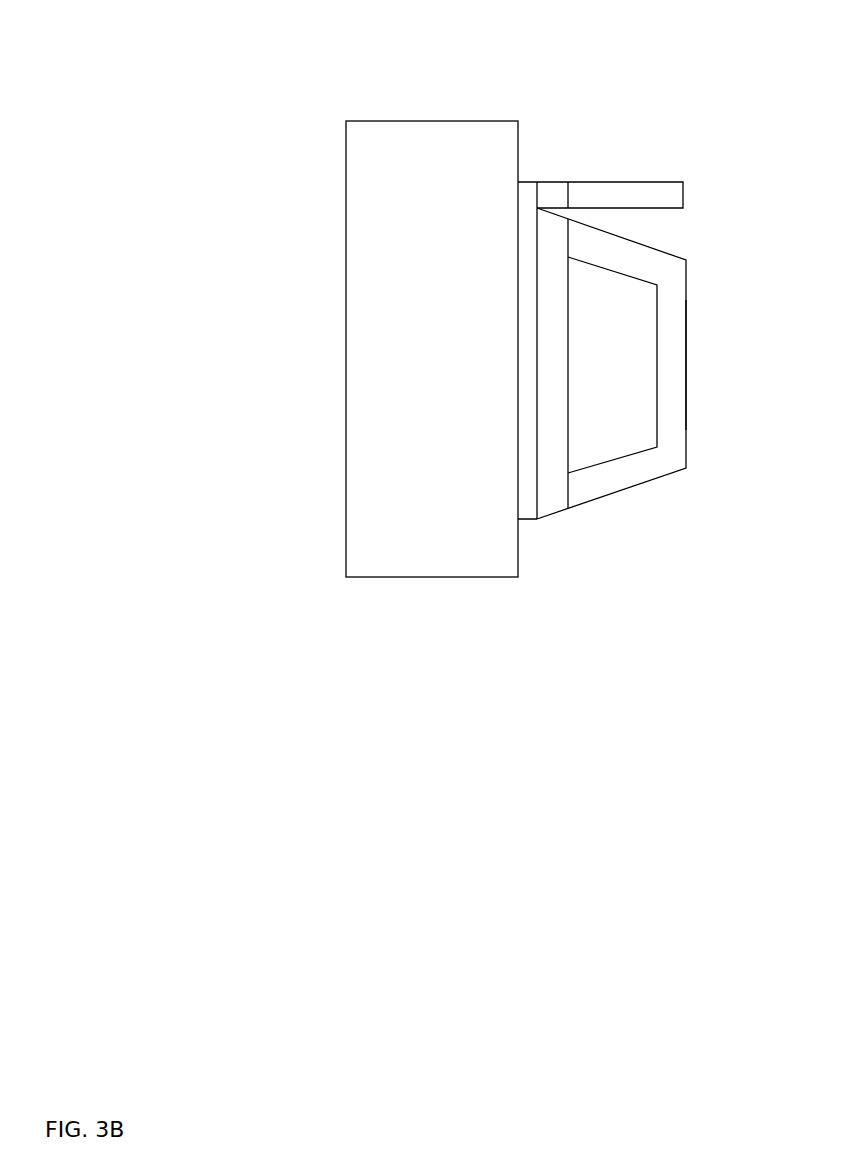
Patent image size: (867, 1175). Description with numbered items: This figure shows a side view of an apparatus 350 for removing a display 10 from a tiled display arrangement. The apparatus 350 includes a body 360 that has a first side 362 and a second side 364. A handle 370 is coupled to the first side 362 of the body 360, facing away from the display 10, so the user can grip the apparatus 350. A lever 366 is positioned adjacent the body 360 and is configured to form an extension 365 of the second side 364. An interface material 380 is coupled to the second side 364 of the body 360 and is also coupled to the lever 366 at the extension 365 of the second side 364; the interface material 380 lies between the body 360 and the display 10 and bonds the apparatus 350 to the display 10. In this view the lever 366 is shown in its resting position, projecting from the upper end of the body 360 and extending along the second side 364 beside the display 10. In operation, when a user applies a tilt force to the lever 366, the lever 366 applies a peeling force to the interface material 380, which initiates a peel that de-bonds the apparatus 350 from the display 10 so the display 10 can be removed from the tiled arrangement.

The display 10 is at (432, 349).
The apparatus 350 is at (586, 83).
The body 360 is at (552, 332).
The first side 362 is at (568, 436).
The second side 364 is at (537, 493).
The extension 365 is at (538, 193).
The lever 366 is at (675, 192).
The handle 370 is at (674, 340).
The interface material 380 is at (527, 192).